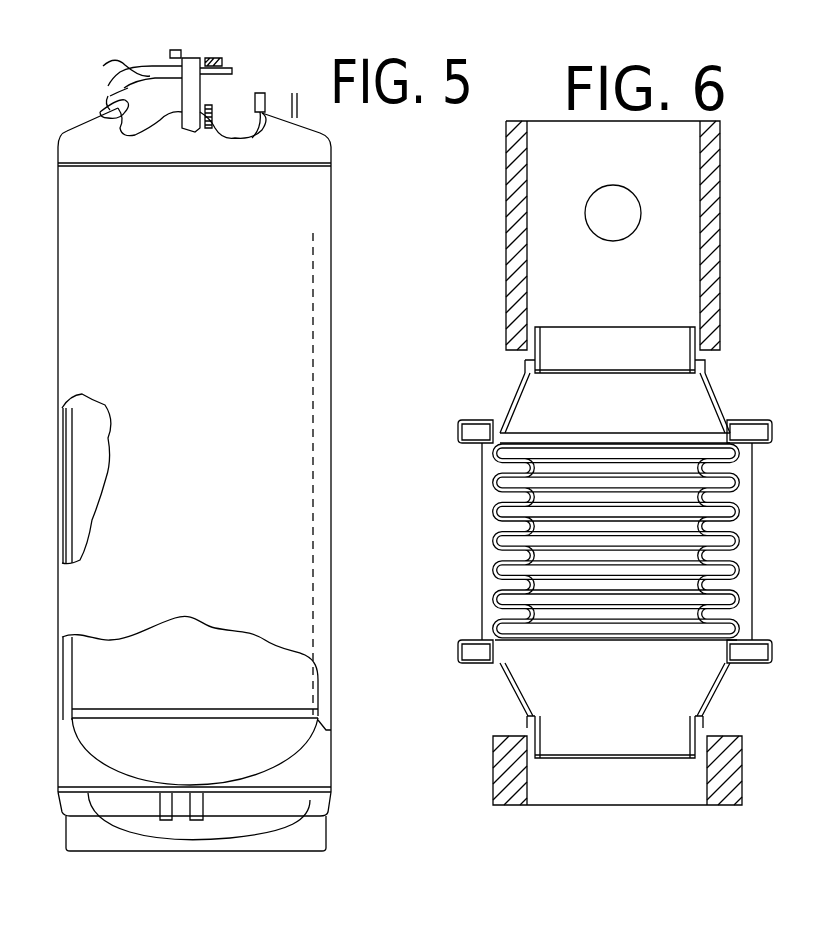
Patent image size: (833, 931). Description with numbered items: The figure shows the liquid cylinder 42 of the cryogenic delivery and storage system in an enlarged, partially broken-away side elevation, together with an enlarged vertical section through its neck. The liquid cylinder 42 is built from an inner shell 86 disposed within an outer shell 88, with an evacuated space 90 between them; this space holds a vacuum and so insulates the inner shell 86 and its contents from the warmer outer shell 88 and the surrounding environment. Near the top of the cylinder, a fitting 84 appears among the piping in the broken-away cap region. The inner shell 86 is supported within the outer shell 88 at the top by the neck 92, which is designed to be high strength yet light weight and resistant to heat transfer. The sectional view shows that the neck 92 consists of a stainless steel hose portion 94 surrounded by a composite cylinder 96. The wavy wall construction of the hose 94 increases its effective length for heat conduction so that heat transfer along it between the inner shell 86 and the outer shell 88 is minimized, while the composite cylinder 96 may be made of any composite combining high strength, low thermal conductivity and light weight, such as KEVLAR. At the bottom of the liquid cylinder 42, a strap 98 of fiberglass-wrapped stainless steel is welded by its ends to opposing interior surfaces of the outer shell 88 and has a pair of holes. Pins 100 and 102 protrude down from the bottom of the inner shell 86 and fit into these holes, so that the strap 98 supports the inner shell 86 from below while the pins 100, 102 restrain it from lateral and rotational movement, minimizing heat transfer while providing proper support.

In FIG. 5, the liquid cylinder 42 is at (344, 351).
In FIG. 5, the fill pipe 84 is at (103, 66).
In FIG. 5, the inner shell 86 is at (70, 452).
In FIG. 6, the inner shell 86 is at (493, 776).
In FIG. 5, the outer shell 88 is at (331, 247).
In FIG. 6, the outer shell 88 is at (720, 185).
In FIG. 5, the evacuated space 90 is at (72, 540).
In FIG. 5, the neck 92 is at (250, 108).
In FIG. 6, the neck 92 is at (466, 485).
In FIG. 6, the stainless steel hose portion 94 is at (737, 535).
In FIG. 6, the composite cylinder 96 is at (482, 550).
In FIG. 5, the strap 98 is at (90, 793).
In FIG. 5, the pin 100 is at (208, 815).
In FIG. 5, the pin 102 is at (160, 815).